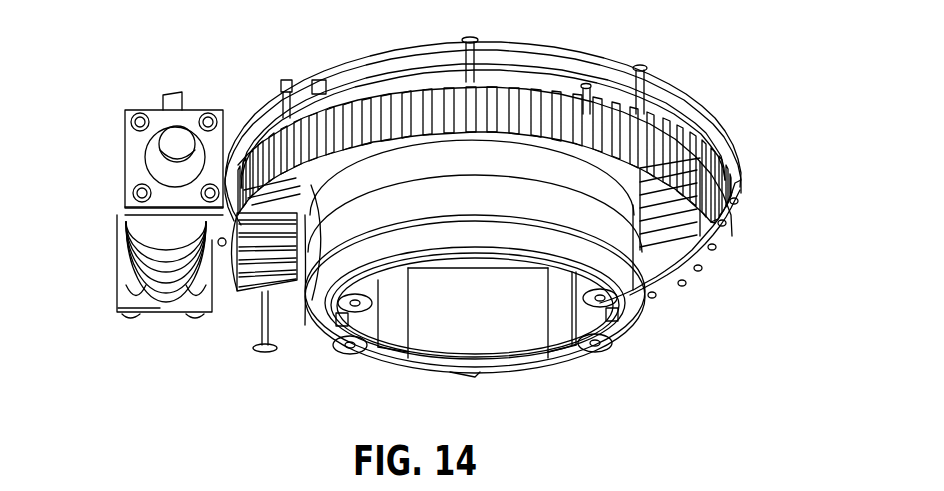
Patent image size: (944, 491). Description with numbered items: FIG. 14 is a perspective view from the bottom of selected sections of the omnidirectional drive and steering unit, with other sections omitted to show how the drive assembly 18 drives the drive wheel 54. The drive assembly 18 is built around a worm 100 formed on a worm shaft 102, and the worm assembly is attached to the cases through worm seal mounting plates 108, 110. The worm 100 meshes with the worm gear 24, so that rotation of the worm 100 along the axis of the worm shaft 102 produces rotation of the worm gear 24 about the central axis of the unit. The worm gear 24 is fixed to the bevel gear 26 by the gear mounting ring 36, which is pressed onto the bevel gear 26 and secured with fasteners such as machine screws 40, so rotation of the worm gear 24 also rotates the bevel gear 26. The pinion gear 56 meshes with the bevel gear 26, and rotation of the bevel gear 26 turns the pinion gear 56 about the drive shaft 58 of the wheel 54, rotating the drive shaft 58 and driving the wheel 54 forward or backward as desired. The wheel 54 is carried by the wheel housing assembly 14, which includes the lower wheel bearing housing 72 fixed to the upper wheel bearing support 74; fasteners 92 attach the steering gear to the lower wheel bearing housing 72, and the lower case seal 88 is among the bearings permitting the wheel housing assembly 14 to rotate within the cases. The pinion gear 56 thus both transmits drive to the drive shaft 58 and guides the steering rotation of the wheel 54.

The wheel housing assembly 14 is at (707, 338).
The drive assembly 18 is at (97, 278).
The worm gear 24 is at (738, 183).
The bevel gear 26 is at (672, 213).
The gear mounting ring 36 is at (668, 92).
The machine screws 40 is at (283, 82).
The drive wheel 54 is at (448, 345).
The pinion gear 56 is at (250, 285).
The drive shaft 58 is at (305, 253).
The lower wheel bearing housing 72 is at (448, 200).
The upper wheel bearing support 74 is at (612, 178).
The lower case seal 88 is at (634, 298).
The fasteners 92 is at (602, 345).
The worm 100 is at (130, 237).
The worm shaft 102 is at (175, 145).
The worm seal mounting plate 108 is at (185, 311).
The worm seal mounting plate 110 is at (160, 117).